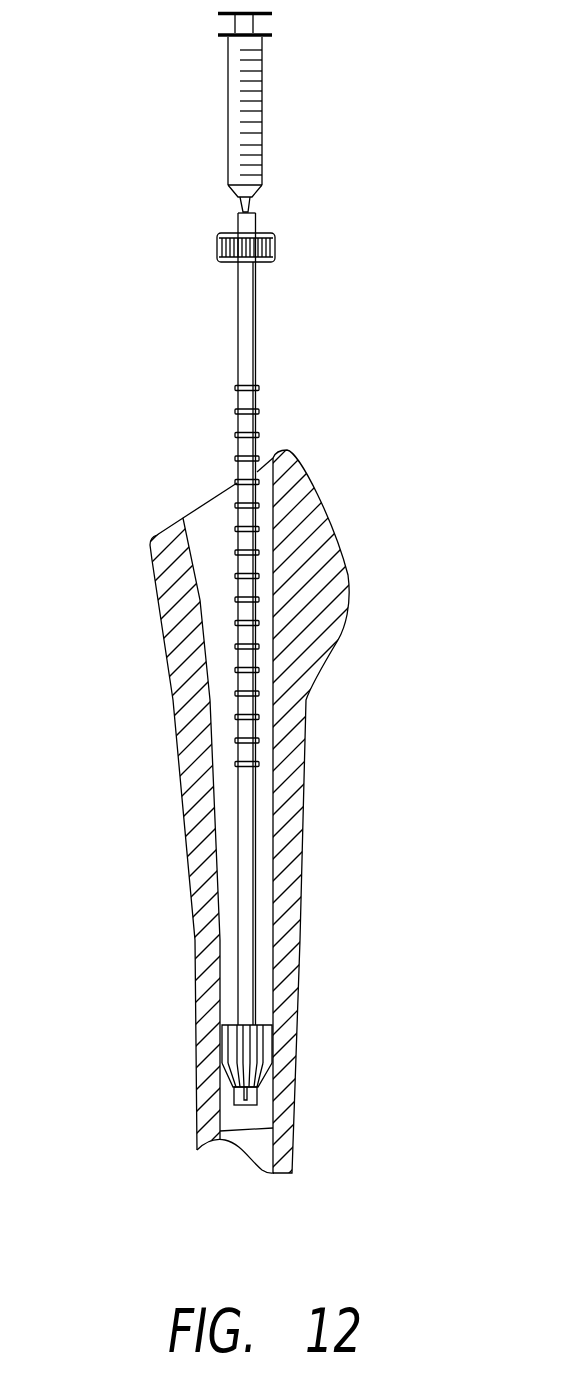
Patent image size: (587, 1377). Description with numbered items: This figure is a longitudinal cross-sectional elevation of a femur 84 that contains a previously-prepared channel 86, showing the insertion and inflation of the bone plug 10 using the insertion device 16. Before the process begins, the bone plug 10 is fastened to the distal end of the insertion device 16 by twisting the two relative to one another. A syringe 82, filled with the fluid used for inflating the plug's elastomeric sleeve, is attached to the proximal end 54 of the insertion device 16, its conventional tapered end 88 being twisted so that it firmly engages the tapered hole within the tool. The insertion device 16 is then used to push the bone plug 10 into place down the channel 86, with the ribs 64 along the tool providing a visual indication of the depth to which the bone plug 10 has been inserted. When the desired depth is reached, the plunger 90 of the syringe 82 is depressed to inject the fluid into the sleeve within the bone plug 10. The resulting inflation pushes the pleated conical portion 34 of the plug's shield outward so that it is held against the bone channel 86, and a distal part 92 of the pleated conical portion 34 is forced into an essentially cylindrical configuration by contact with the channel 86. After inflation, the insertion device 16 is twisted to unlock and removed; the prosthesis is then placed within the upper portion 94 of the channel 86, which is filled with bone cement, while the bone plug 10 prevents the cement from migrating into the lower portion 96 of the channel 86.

The bone plug 10 is at (258, 1091).
The insertion device 16 is at (256, 317).
The pleated conical portion 34 is at (233, 1083).
The proximal end 54 is at (254, 216).
The ribs 64 is at (237, 390).
The syringe 82 is at (263, 120).
The femur 84 is at (302, 835).
The channel 86 is at (270, 883).
The tapered end 88 is at (240, 205).
The plunger 90 is at (272, 13).
The distal part 92 is at (277, 1062).
The upper portion 94 is at (202, 632).
The lower portion 96 is at (220, 1131).